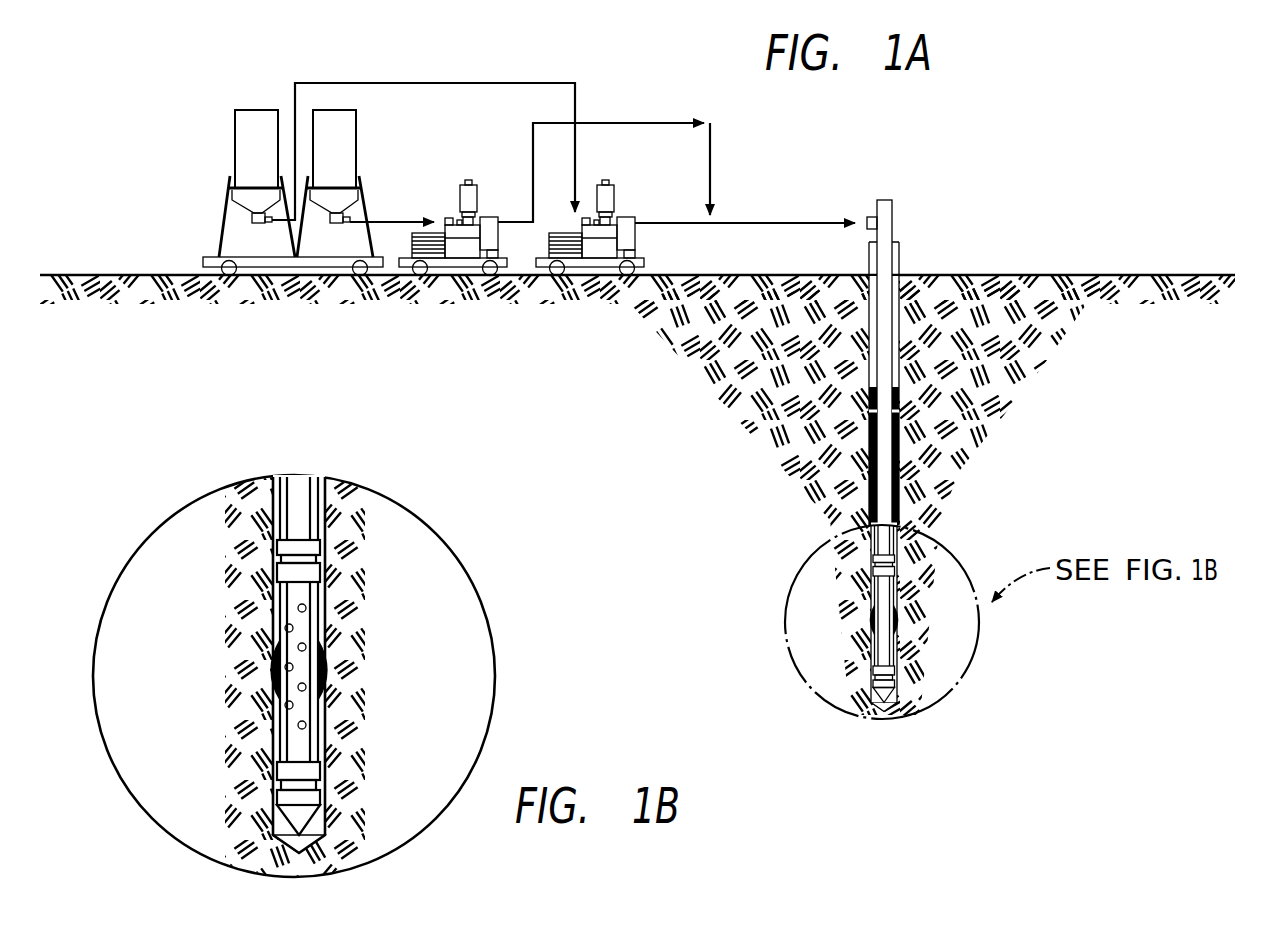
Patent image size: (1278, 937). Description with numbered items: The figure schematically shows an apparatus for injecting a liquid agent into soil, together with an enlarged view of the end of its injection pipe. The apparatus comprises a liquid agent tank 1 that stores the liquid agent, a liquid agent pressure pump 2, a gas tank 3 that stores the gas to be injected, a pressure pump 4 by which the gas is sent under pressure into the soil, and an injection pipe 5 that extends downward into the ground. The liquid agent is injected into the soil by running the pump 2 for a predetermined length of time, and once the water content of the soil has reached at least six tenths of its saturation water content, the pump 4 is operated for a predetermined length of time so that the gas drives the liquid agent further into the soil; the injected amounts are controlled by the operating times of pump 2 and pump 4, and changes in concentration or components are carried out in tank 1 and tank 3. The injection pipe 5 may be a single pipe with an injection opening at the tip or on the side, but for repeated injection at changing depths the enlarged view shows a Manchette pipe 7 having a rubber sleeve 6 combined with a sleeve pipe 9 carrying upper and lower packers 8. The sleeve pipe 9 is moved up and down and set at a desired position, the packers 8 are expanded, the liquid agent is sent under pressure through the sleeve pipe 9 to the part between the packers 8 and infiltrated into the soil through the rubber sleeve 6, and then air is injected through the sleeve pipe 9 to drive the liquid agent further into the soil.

In FIG. 1A, the liquid agent tank 1 is at (233, 141).
In FIG. 1A, the gas tank 3 is at (359, 148).
In FIG. 1A, the pressure pump 4 is at (462, 182).
In FIG. 1A, the liquid agent pressure pump 2 is at (600, 182).
In FIG. 1A, the injection pipe 5 is at (893, 222).
In FIG. 1B, the sleeve pipe 9 is at (306, 520).
In FIG. 1B, the packers 8 is at (310, 572).
In FIG. 1B, the rubber sleeve 6 is at (328, 677).
In FIG. 1B, the Manchette pipe 7 is at (326, 733).